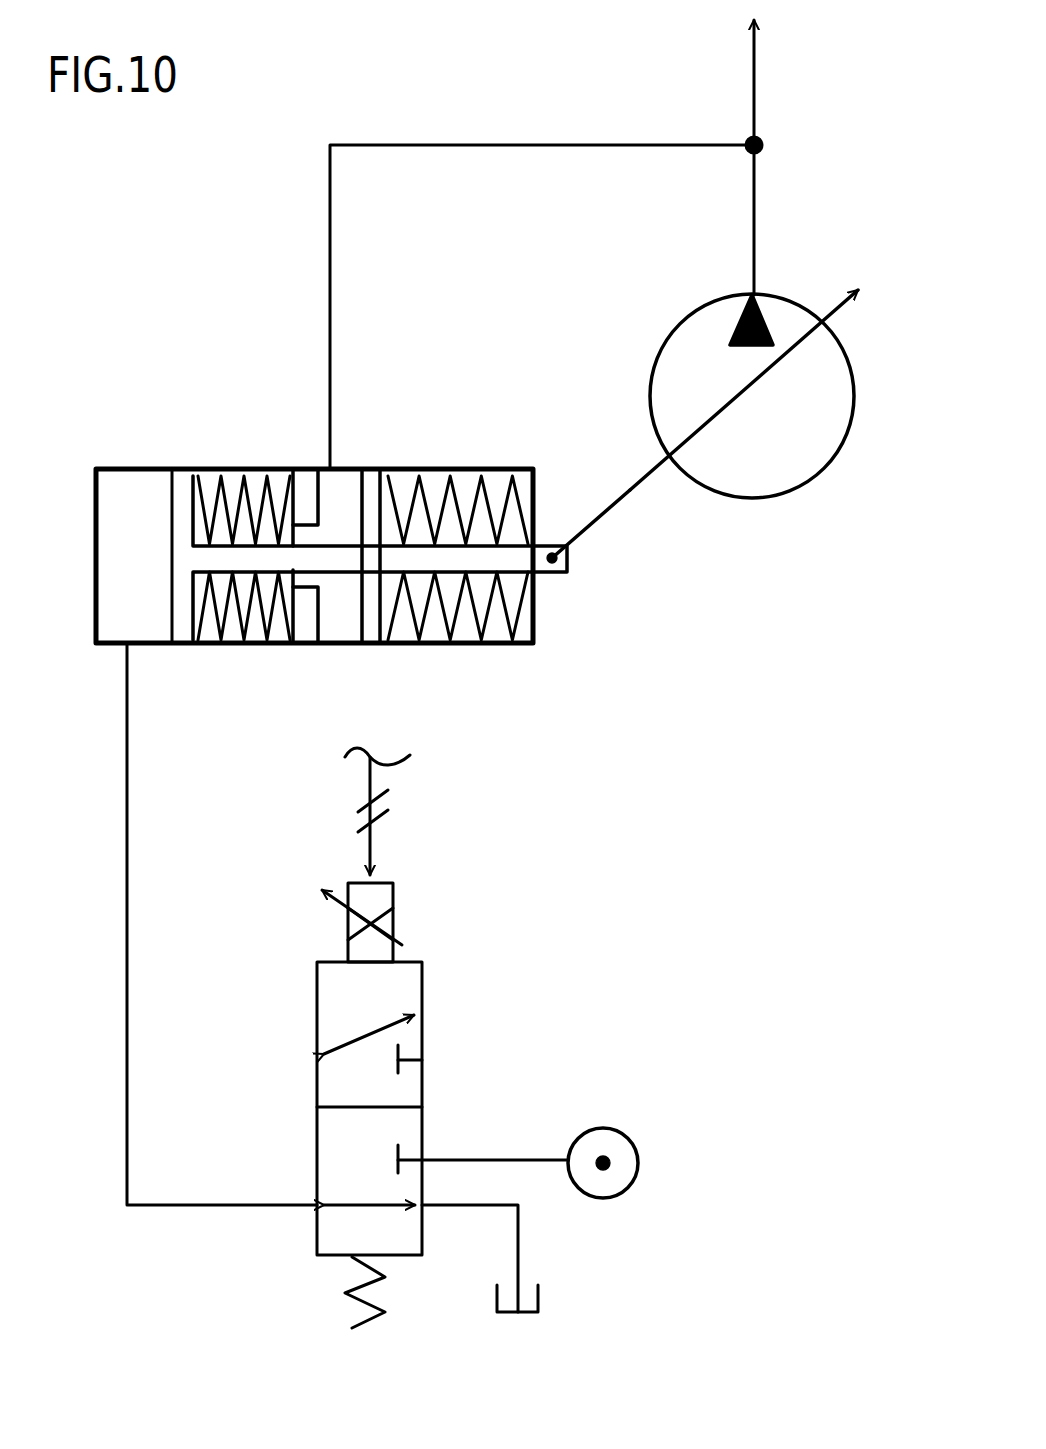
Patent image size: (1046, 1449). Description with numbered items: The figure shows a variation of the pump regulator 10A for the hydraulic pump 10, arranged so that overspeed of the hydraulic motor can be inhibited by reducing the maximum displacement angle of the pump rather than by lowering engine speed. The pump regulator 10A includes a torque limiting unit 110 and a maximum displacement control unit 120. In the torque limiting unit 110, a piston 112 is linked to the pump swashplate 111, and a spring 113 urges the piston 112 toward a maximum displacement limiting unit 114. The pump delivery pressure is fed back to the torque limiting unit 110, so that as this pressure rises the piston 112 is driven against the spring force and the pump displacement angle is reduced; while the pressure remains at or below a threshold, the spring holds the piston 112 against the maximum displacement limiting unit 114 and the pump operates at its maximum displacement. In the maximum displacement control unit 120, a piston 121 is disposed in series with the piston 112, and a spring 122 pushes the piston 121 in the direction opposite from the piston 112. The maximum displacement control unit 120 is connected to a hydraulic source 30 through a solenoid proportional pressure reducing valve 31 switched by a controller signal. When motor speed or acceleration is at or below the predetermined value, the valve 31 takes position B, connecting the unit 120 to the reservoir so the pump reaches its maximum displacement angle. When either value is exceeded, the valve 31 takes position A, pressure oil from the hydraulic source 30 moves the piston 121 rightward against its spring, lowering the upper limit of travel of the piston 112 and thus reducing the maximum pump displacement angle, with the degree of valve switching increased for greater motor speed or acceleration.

The hydraulic pump 10 is at (823, 482).
The pump regulator 10A is at (414, 509).
The torque limiting unit 110 is at (343, 490).
The pump swashplate 111 is at (643, 490).
The piston 112 is at (358, 612).
The spring 113 is at (450, 615).
The maximum displacement limiting unit 114 is at (307, 470).
The maximum displacement control unit 120 is at (123, 488).
The piston 121 is at (180, 510).
The spring 122 is at (267, 615).
The hydraulic source 30 is at (628, 1142).
The solenoid proportional pressure reducing valve 31 is at (317, 1033).